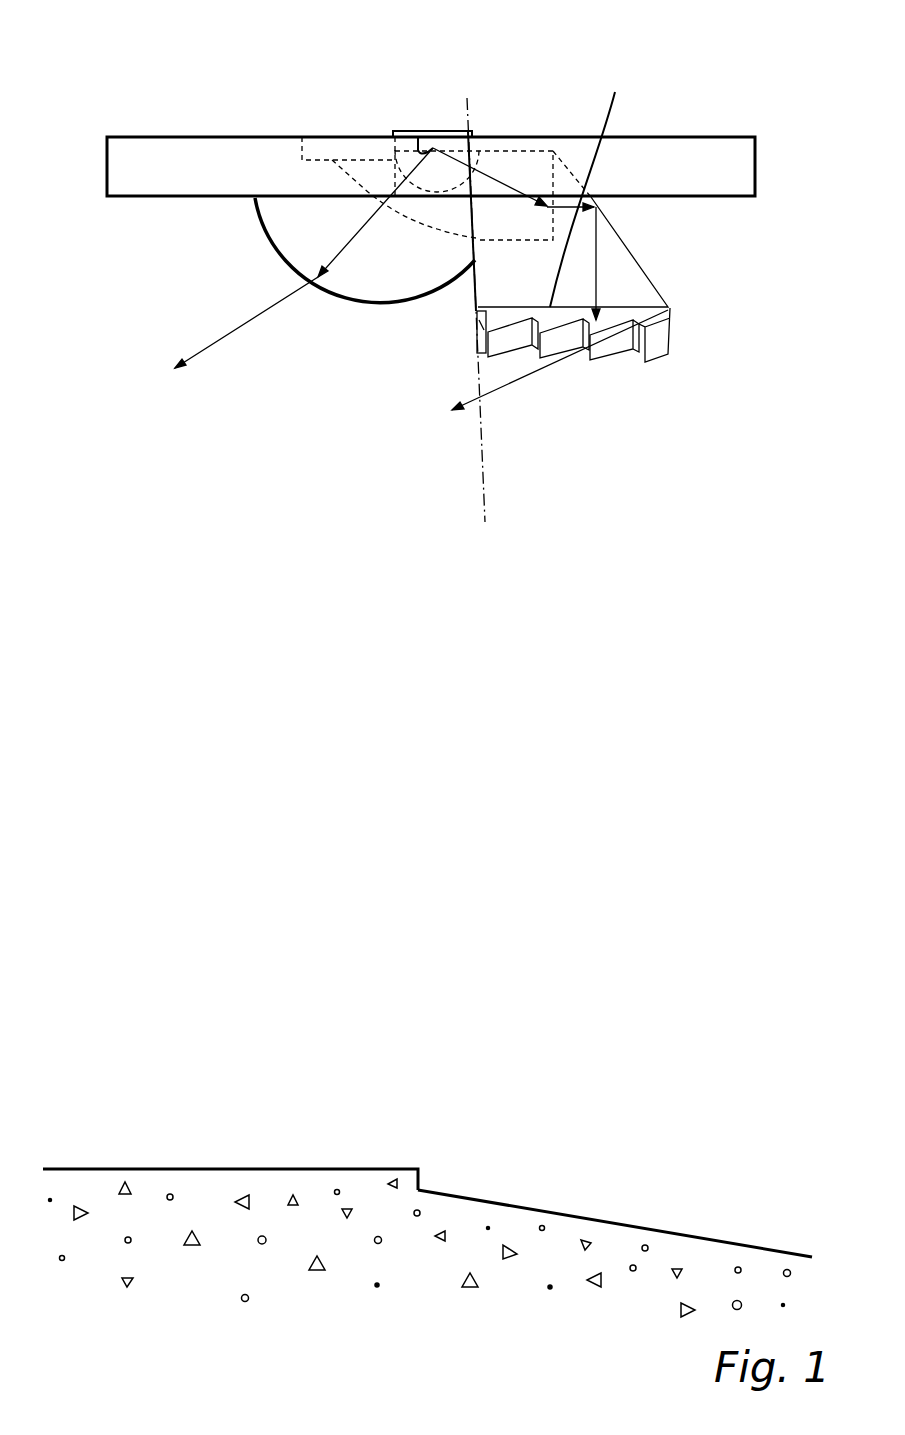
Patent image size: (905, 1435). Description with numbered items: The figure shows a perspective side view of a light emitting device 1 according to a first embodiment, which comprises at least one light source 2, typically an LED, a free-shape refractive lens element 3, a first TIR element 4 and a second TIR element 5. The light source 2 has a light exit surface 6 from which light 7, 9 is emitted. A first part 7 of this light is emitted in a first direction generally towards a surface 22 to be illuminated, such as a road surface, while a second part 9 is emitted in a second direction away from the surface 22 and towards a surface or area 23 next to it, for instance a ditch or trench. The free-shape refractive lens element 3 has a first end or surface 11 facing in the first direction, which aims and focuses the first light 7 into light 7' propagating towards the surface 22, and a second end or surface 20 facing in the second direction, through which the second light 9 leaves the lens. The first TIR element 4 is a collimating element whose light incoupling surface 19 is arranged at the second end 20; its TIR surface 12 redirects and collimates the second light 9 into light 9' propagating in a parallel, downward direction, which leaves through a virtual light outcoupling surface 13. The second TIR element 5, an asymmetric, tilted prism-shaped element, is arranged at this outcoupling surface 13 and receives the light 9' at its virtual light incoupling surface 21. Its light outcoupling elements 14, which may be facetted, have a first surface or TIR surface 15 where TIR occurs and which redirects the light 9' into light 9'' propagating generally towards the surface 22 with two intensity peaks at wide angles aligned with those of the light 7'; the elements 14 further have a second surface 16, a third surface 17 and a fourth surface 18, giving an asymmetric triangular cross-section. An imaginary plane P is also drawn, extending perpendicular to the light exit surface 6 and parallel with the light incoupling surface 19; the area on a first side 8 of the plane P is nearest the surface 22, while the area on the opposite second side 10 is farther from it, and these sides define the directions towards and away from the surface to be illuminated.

The light emitting device 1 is at (275, 92).
The light source 2 is at (443, 132).
The free-shape refractive lens element 3 is at (382, 277).
The first TIR element 4 is at (668, 277).
The second TIR element 5 is at (698, 345).
The light exit surface 6 is at (395, 148).
The first part of the light 7 is at (408, 113).
The light propagating towards the surface to be illuminated 7' is at (304, 275).
The first side 8 is at (398, 467).
The second part of the light 9 is at (494, 182).
The collimated and redirected light 9' is at (570, 234).
The redirected light 9'' is at (511, 313).
The second side 10 is at (628, 502).
The first end or surface 11 is at (290, 258).
The TIR surface 12 is at (667, 297).
The light outcoupling surface 13 is at (591, 186).
The light outcoupling elements 14 is at (607, 387).
The first surface or TIR surface 15 is at (470, 373).
The second surface 16 is at (473, 330).
The third surface 17 is at (478, 306).
The fourth surface 18 is at (522, 358).
The light incoupling surface 19 is at (478, 302).
The second end or surface 20 is at (473, 262).
The light incoupling surface 21 is at (578, 330).
The surface to be illuminated 22 is at (153, 1168).
The surface or area next to the surface to be illuminated 23 is at (707, 1235).
The imaginary plane P is at (483, 487).